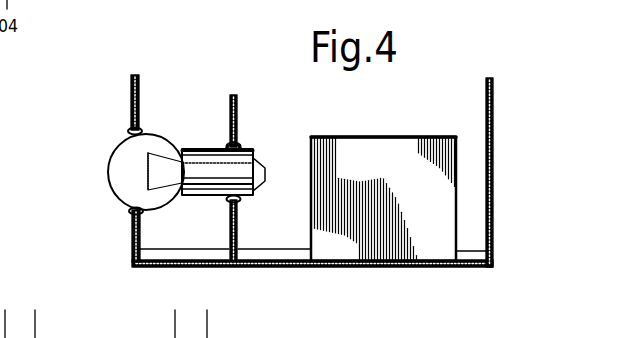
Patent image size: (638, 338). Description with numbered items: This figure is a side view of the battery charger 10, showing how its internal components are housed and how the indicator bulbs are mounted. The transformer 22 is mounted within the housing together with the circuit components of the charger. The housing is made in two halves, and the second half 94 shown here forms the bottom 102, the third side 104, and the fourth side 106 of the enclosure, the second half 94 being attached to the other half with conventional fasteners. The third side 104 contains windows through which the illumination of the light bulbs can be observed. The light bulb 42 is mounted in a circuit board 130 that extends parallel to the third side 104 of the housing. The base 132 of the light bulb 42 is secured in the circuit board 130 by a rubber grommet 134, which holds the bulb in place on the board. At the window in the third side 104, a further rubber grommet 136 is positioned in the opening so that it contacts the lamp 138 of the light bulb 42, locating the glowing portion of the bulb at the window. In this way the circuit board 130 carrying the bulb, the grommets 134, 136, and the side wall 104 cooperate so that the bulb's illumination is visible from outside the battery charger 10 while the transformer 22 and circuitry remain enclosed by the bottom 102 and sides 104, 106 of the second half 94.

The battery charger 10 is at (483, 37).
The transformer 22 is at (381, 137).
The light bulb 42 is at (197, 148).
The second half 94 is at (473, 257).
The bottom 102 is at (263, 267).
The third side 104 is at (132, 238).
The fourth side 106 is at (493, 120).
The circuit board 130 is at (235, 95).
The base 132 is at (245, 149).
The rubber grommet 134 is at (240, 203).
The rubber grommet 136 is at (128, 134).
The lamp 138 is at (110, 177).